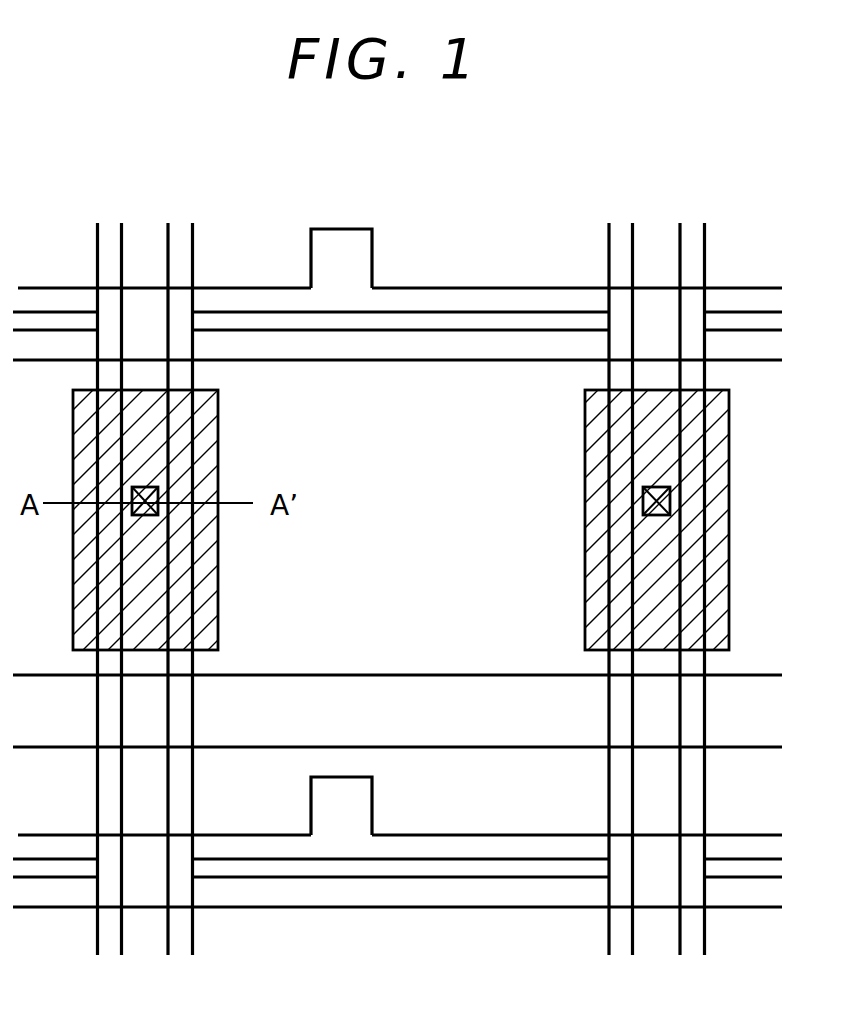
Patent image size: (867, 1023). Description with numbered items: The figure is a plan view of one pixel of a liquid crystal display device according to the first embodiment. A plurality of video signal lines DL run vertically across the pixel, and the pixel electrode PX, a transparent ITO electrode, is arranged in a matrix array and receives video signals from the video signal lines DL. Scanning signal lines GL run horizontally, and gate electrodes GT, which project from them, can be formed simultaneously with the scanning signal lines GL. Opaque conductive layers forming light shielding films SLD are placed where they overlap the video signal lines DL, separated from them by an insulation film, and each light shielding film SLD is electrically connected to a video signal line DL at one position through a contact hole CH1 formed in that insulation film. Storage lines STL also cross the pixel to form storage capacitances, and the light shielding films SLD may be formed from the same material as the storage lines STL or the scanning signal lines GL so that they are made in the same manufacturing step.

The video signal line DL is at (170, 262).
The scanning signal line GL is at (405, 288).
The gate electrode GT is at (352, 229).
The pixel electrode PX is at (452, 330).
The storage line STL is at (748, 675).
The light shielding film SLD is at (218, 578).
The contact hole CH1 is at (158, 487).